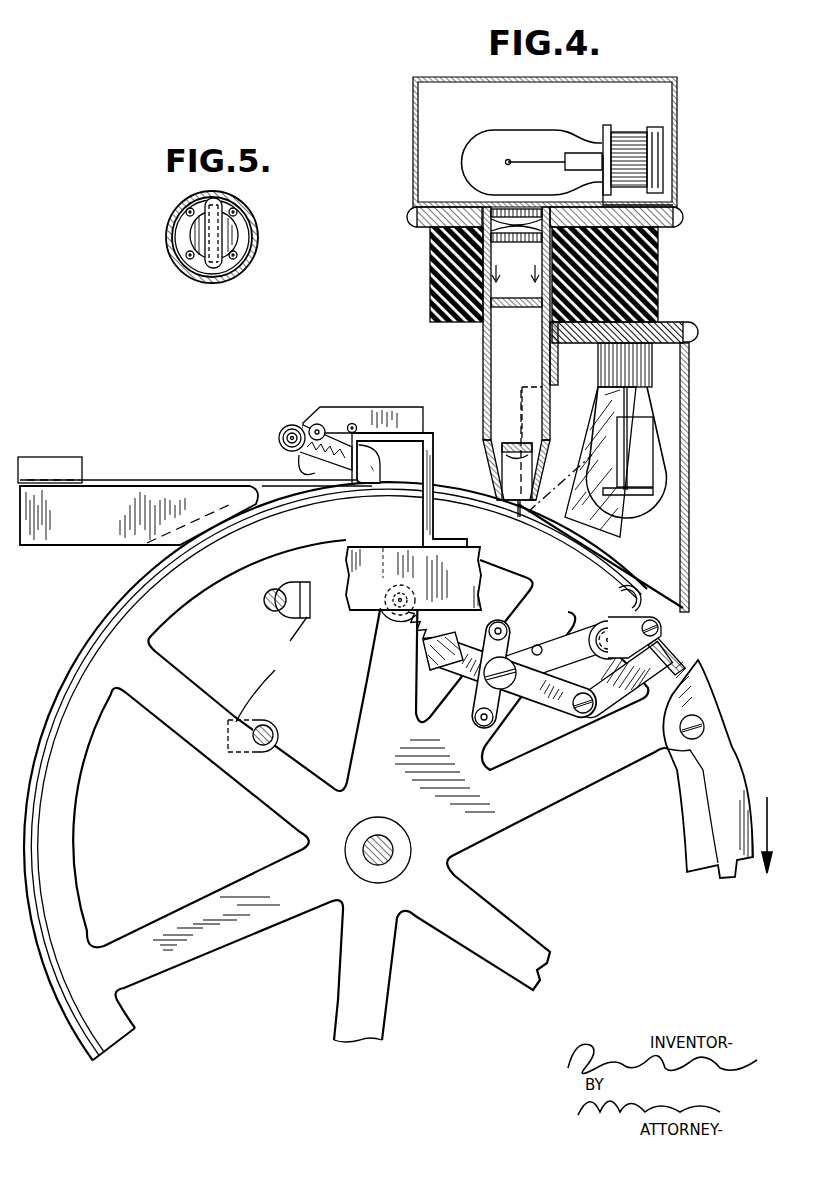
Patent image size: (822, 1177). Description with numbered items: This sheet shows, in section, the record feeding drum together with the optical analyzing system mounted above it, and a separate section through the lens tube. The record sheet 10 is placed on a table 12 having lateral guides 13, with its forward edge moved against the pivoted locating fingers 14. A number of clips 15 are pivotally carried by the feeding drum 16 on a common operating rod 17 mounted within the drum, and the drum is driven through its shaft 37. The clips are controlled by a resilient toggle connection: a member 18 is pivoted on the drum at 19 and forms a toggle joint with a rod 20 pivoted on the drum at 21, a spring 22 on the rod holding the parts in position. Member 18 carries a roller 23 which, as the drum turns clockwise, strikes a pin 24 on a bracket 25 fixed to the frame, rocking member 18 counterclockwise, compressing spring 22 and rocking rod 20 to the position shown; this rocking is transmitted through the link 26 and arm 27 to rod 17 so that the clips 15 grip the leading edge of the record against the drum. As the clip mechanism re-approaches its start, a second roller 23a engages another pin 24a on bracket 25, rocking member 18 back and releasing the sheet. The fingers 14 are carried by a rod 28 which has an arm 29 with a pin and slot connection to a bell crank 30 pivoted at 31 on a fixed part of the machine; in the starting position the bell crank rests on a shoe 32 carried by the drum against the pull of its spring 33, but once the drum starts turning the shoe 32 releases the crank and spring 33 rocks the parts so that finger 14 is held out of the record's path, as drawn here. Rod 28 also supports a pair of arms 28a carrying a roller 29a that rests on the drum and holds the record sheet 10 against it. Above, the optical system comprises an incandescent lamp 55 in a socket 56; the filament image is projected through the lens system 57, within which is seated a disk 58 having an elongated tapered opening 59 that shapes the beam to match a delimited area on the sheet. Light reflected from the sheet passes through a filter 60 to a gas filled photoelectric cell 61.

In FIG. 4, the record sheet 10 is at (190, 480).
In FIG. 4, the table 12 is at (100, 493).
In FIG. 4, the lateral guides 13 is at (54, 461).
In FIG. 4, the locating fingers 14 is at (290, 468).
In FIG. 4, the clips 15 is at (660, 607).
In FIG. 4, the feeding drum 16 is at (502, 802).
In FIG. 4, the operating rod 17 is at (598, 647).
In FIG. 4, the member 18 is at (563, 710).
In FIG. 4, the pivot 19 is at (512, 658).
In FIG. 4, the rod 20 is at (425, 640).
In FIG. 4, the pivot 21 is at (357, 612).
In FIG. 4, the spring 22 is at (428, 655).
In FIG. 4, the roller 23 is at (500, 622).
In FIG. 4, the second roller 23a is at (497, 727).
In FIG. 4, the pin 24 is at (258, 600).
In FIG. 4, the pin 24a is at (276, 737).
In FIG. 4, the bracket 25 is at (271, 669).
In FIG. 4, the link 26 is at (670, 654).
In FIG. 4, the arm 27 is at (662, 631).
In FIG. 4, the rod 28 is at (292, 430).
In FIG. 4, the arms 28a is at (337, 463).
In FIG. 4, the arm 29 is at (313, 424).
In FIG. 4, the roller 29a is at (366, 487).
In FIG. 4, the bell crank 30 is at (332, 422).
In FIG. 4, the pivot 31 is at (360, 433).
In FIG. 4, the shoe 32 is at (717, 747).
In FIG. 4, the spring 33 is at (360, 443).
In FIG. 4, the shaft 37 is at (384, 858).
In FIG. 4, the incandescent lamps 55 is at (558, 135).
In FIG. 4, the sockets 56 is at (640, 147).
In FIG. 4, the lens system 57 is at (497, 372).
In FIG. 5, the lens system 57 is at (243, 265).
In FIG. 4, the disk 58 is at (500, 310).
In FIG. 5, the disk 58 is at (223, 223).
In FIG. 4, the elongated tapered opening 59 is at (516, 310).
In FIG. 5, the elongated tapered opening 59 is at (219, 238).
In FIG. 4, the filter 60 is at (614, 527).
In FIG. 4, the photoelectric cell 61 is at (657, 460).